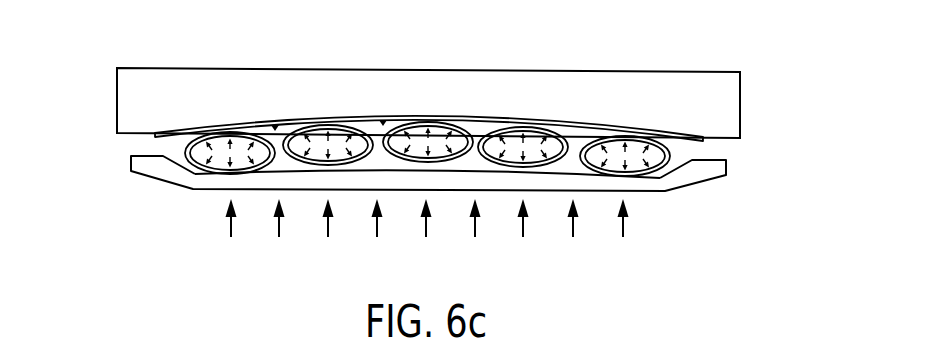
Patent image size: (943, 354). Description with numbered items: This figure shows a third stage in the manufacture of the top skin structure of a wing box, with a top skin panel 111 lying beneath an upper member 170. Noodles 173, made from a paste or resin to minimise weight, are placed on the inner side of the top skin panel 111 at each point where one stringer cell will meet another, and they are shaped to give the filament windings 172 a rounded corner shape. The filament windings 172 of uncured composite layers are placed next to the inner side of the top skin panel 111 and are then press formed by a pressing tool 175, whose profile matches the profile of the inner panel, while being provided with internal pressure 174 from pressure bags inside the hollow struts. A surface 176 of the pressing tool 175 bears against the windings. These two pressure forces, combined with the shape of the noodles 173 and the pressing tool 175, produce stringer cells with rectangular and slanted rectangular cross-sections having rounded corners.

The substrate 170 is at (235, 82).
The top skin panel 111 is at (171, 136).
The noodles 173 is at (464, 136).
The filament windings 172 is at (190, 166).
The internal pressure 174 is at (630, 157).
The pressing tool 175 is at (428, 216).
The support surface 176 is at (297, 173).